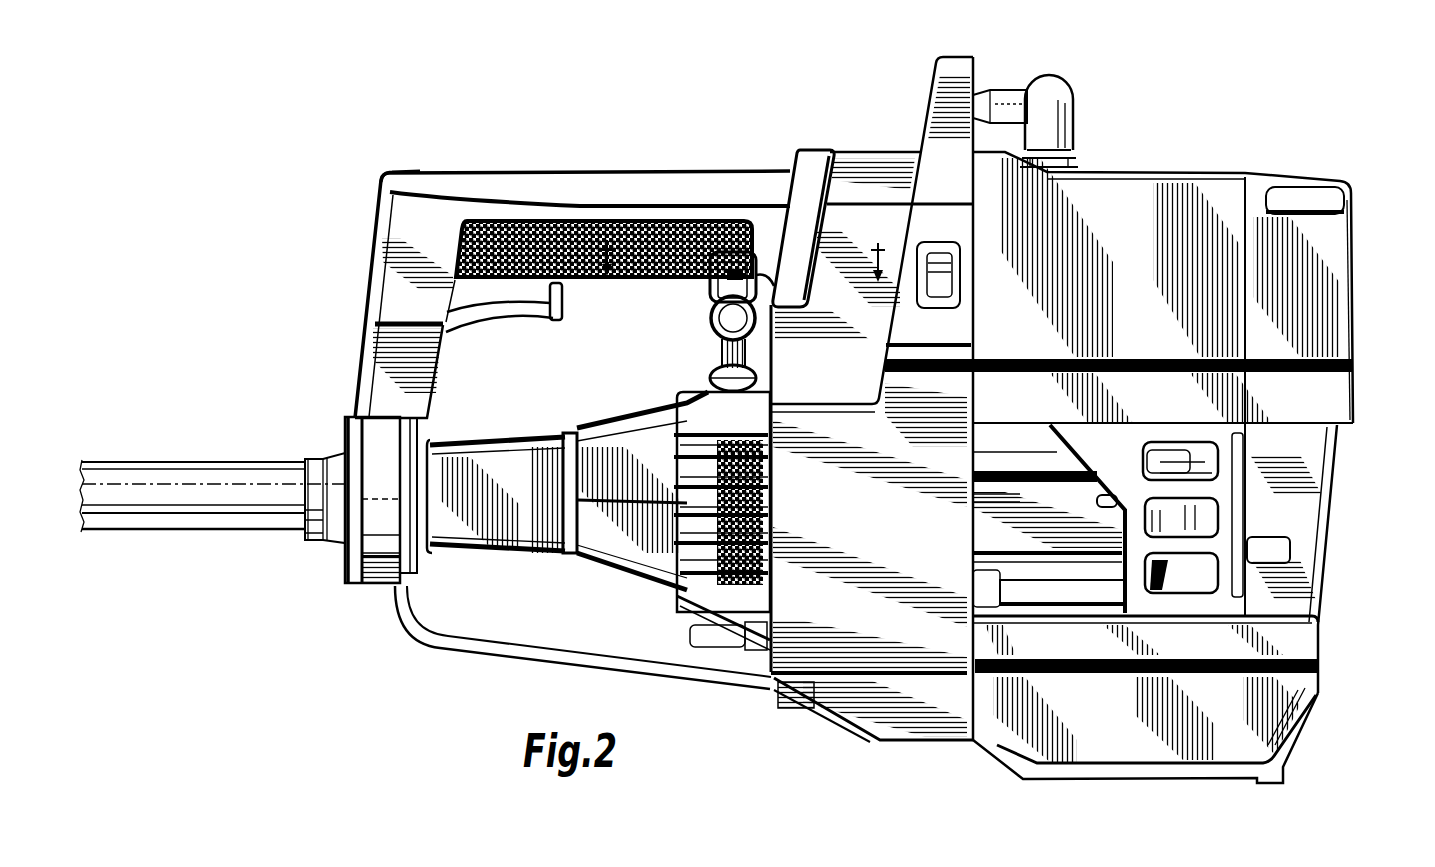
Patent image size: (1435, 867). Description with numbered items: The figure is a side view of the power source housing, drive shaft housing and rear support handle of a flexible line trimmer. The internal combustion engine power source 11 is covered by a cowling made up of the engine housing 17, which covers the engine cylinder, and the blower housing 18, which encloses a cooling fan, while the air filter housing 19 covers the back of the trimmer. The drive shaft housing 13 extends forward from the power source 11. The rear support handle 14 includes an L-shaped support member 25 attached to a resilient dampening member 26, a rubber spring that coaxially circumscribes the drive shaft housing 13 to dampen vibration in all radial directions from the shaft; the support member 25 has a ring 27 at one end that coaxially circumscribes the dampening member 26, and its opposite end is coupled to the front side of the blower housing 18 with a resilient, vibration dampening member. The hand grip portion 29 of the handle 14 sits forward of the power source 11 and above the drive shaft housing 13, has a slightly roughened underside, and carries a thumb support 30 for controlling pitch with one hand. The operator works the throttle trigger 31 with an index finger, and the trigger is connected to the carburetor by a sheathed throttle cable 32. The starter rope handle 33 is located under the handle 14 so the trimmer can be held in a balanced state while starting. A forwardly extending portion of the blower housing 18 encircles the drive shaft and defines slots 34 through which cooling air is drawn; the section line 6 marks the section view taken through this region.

The section line 6- 6 is at (743, 248).
The power source 11 is at (1120, 792).
The drive shaft housing 13 is at (200, 524).
The rear support handle 14 is at (369, 146).
The engine housing 17 is at (1142, 203).
The blower housing 18 is at (897, 637).
The air filter housing 19 is at (1303, 500).
The L-shaped support member 25 is at (581, 171).
The resilient dampening member 26 is at (335, 455).
The ring 27 is at (375, 588).
The hand grip portion 29 is at (597, 279).
The thumb support 30 is at (417, 170).
The throttle trigger 31 is at (510, 312).
The sheathed throttle cable 32 is at (545, 660).
The starter rope handle 33 is at (708, 297).
The slots 34 is at (774, 498).